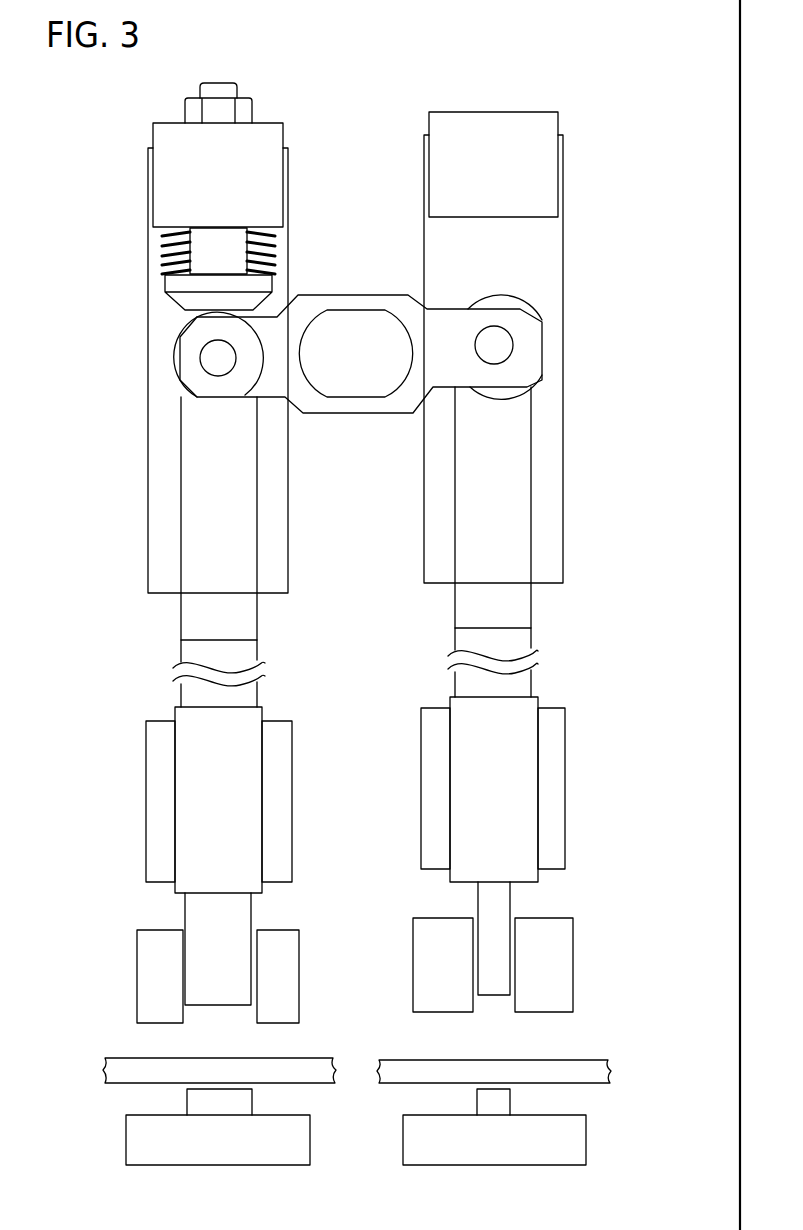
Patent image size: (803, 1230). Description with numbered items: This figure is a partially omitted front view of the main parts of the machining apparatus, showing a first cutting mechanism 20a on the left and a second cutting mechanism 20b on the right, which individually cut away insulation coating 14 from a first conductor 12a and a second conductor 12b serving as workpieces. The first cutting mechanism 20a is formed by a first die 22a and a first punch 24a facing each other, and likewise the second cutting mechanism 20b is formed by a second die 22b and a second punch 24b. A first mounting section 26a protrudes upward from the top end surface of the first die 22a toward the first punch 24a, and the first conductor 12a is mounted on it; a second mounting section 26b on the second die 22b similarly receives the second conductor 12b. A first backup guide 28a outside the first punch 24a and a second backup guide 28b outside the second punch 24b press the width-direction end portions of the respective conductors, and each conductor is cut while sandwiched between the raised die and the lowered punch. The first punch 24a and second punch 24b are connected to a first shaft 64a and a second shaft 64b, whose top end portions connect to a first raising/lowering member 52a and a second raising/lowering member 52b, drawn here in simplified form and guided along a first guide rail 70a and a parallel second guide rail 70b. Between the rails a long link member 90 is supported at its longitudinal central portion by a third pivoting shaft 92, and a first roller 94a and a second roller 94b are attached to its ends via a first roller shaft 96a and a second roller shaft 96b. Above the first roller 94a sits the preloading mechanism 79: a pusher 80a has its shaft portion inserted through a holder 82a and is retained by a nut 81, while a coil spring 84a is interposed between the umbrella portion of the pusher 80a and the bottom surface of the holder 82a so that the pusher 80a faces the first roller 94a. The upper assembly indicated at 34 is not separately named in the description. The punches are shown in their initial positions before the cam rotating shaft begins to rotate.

The first conductor 12a is at (101, 1047).
The second conductor 12b is at (614, 1047).
The insulation coating 14 is at (313, 1067).
The first cutting mechanism 20a is at (121, 443).
The second cutting mechanism 20b is at (594, 433).
The first die 22a is at (116, 1147).
The second die 22b is at (597, 1149).
The first punch 24a is at (208, 918).
The second punch 24b is at (503, 905).
The first mounting section 26a is at (195, 1103).
The second mounting section 26b is at (497, 1106).
The first backup guide 28a is at (152, 967).
The second backup guide 28b is at (560, 957).
The pressing mechanism 34 is at (314, 150).
The first raising/lowering member 52a is at (252, 626).
The second raising/lowering member 52b is at (465, 617).
The first shaft 64a is at (200, 647).
The second shaft 64b is at (508, 643).
The first guide rail 70a is at (165, 303).
The second guide rail 70b is at (547, 292).
The preloading mechanism 79 is at (299, 240).
The pusher 80a is at (177, 285).
The nut 81 is at (192, 112).
The holder 82a is at (264, 134).
The coil spring 84a is at (213, 239).
The link member 90 is at (362, 402).
The third pivoting shaft 92 is at (350, 327).
The first roller 94a is at (171, 374).
The second roller 94b is at (540, 365).
The first roller shaft 96a is at (212, 358).
The second roller shaft 96b is at (497, 345).